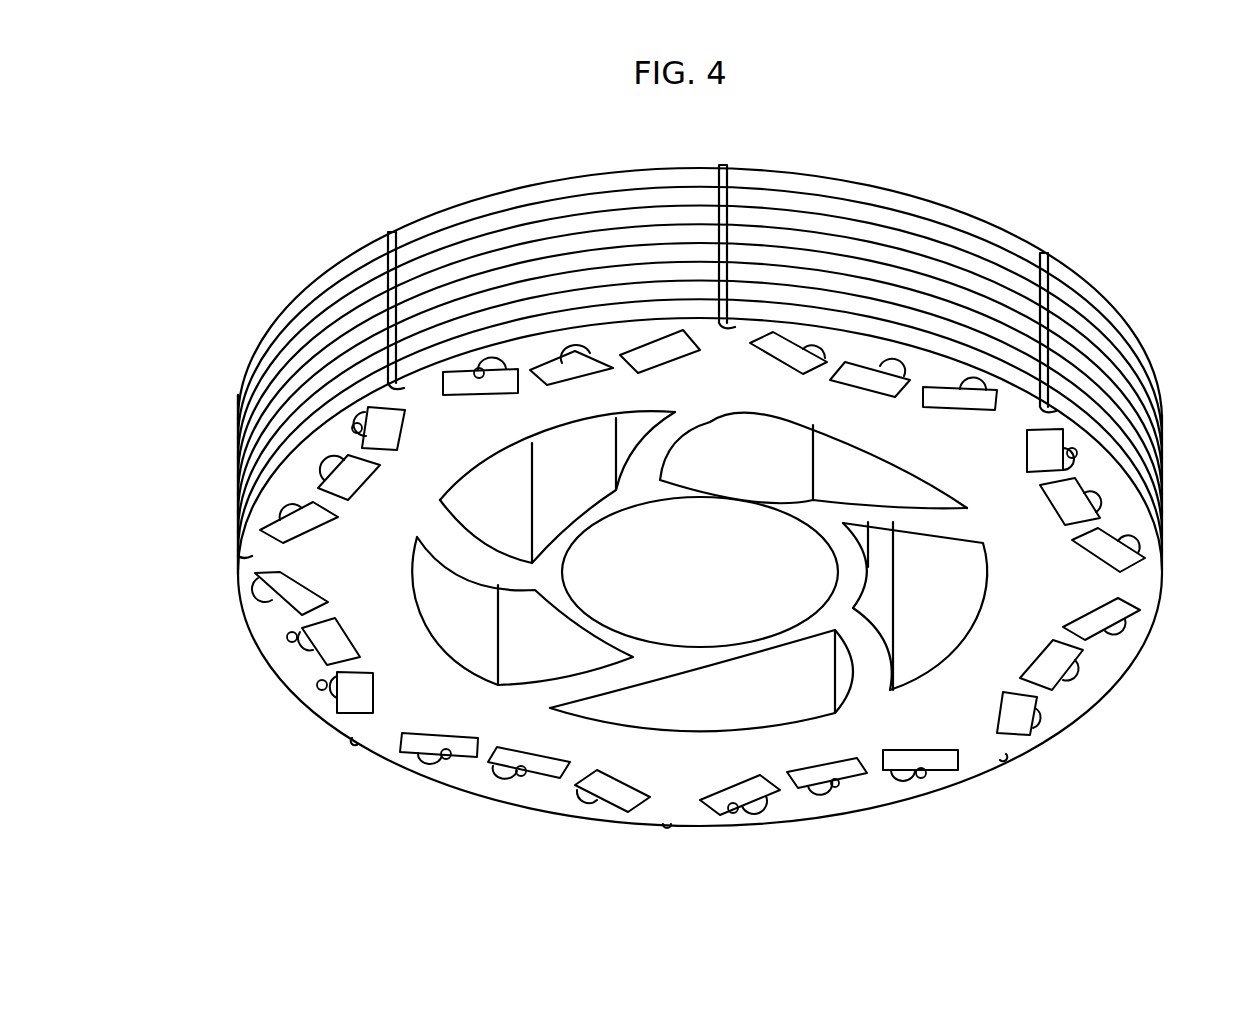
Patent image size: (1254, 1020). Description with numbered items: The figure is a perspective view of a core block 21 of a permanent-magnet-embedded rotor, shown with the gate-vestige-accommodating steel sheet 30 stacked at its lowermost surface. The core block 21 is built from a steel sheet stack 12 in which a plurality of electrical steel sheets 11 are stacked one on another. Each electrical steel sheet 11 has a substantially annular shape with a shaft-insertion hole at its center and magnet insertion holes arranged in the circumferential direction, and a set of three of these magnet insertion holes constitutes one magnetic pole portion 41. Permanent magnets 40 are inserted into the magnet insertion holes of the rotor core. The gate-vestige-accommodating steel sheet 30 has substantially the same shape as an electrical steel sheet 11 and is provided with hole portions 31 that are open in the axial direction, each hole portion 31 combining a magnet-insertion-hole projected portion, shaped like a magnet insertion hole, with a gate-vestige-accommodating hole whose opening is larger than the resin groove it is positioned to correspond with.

The electrical steel sheet 11 is at (627, 247).
The steel sheet stack 12 is at (1166, 415).
The core block 21 is at (230, 480).
The gate-vestige-accommodating steel sheet 30 is at (401, 710).
The hole portion 31 is at (733, 786).
The permanent magnet 40 is at (443, 755).
The magnetic pole portion 41 is at (294, 642).